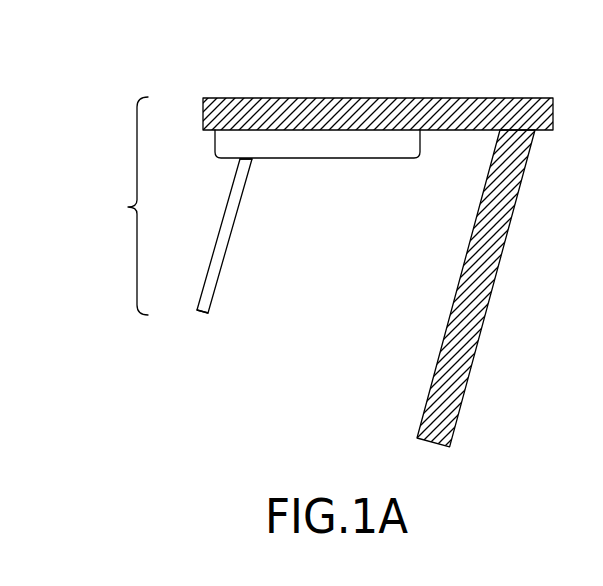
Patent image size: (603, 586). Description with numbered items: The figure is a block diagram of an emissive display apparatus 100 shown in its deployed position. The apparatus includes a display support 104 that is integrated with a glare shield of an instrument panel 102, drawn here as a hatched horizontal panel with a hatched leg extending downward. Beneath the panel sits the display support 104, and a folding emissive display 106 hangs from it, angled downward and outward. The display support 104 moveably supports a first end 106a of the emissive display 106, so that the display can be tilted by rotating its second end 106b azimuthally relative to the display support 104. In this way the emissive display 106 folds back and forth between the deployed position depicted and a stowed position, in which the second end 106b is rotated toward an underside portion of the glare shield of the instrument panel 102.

The emissive display apparatus 100 is at (117, 206).
The instrument panel 102 is at (268, 99).
The display support 104 is at (215, 140).
The emissive display 106 is at (221, 230).
The first end 106a is at (252, 160).
The second end 106b is at (203, 313).